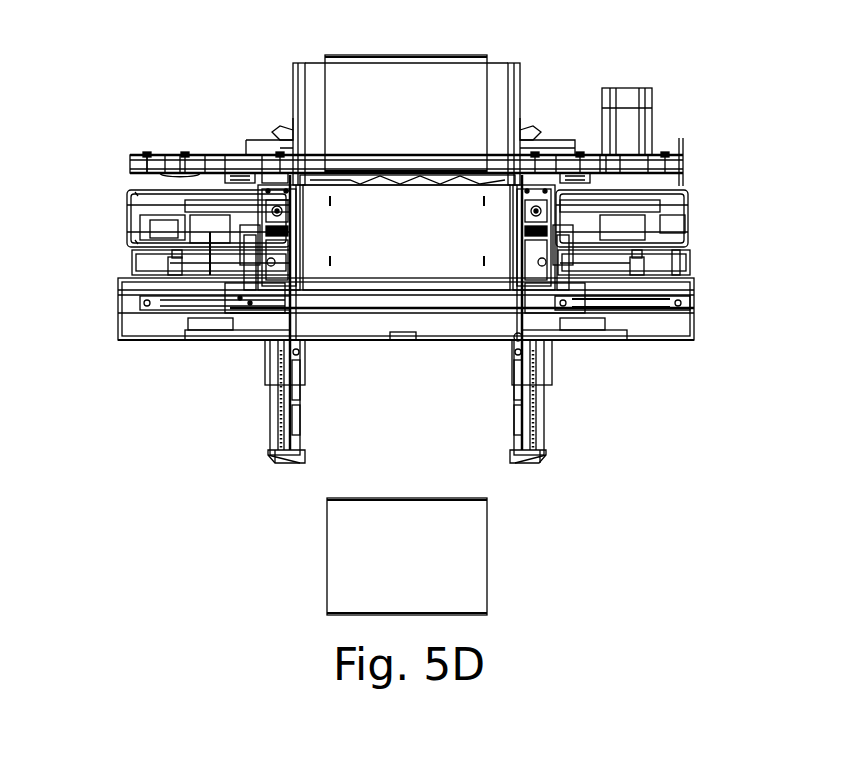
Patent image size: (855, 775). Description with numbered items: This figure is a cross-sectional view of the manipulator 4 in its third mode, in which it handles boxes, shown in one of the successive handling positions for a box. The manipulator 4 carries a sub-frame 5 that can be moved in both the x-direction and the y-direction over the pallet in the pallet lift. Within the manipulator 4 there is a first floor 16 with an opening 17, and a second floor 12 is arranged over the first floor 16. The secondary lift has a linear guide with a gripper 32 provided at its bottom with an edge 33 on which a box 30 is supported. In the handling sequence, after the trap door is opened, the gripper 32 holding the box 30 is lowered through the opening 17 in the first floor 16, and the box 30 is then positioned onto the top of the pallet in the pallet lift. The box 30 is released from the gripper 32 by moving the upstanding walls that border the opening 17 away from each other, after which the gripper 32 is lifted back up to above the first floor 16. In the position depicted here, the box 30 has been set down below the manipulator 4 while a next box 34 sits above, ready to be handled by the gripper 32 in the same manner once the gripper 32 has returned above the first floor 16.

The manipulator 4 is at (713, 162).
The sub-frame 5 is at (127, 225).
The second floor 12 is at (148, 155).
The first floor 16 is at (118, 328).
The opening 17 is at (508, 340).
The box 30 is at (470, 592).
The gripper 32 is at (270, 440).
The edge 33 is at (285, 470).
The next box 34 is at (452, 78).